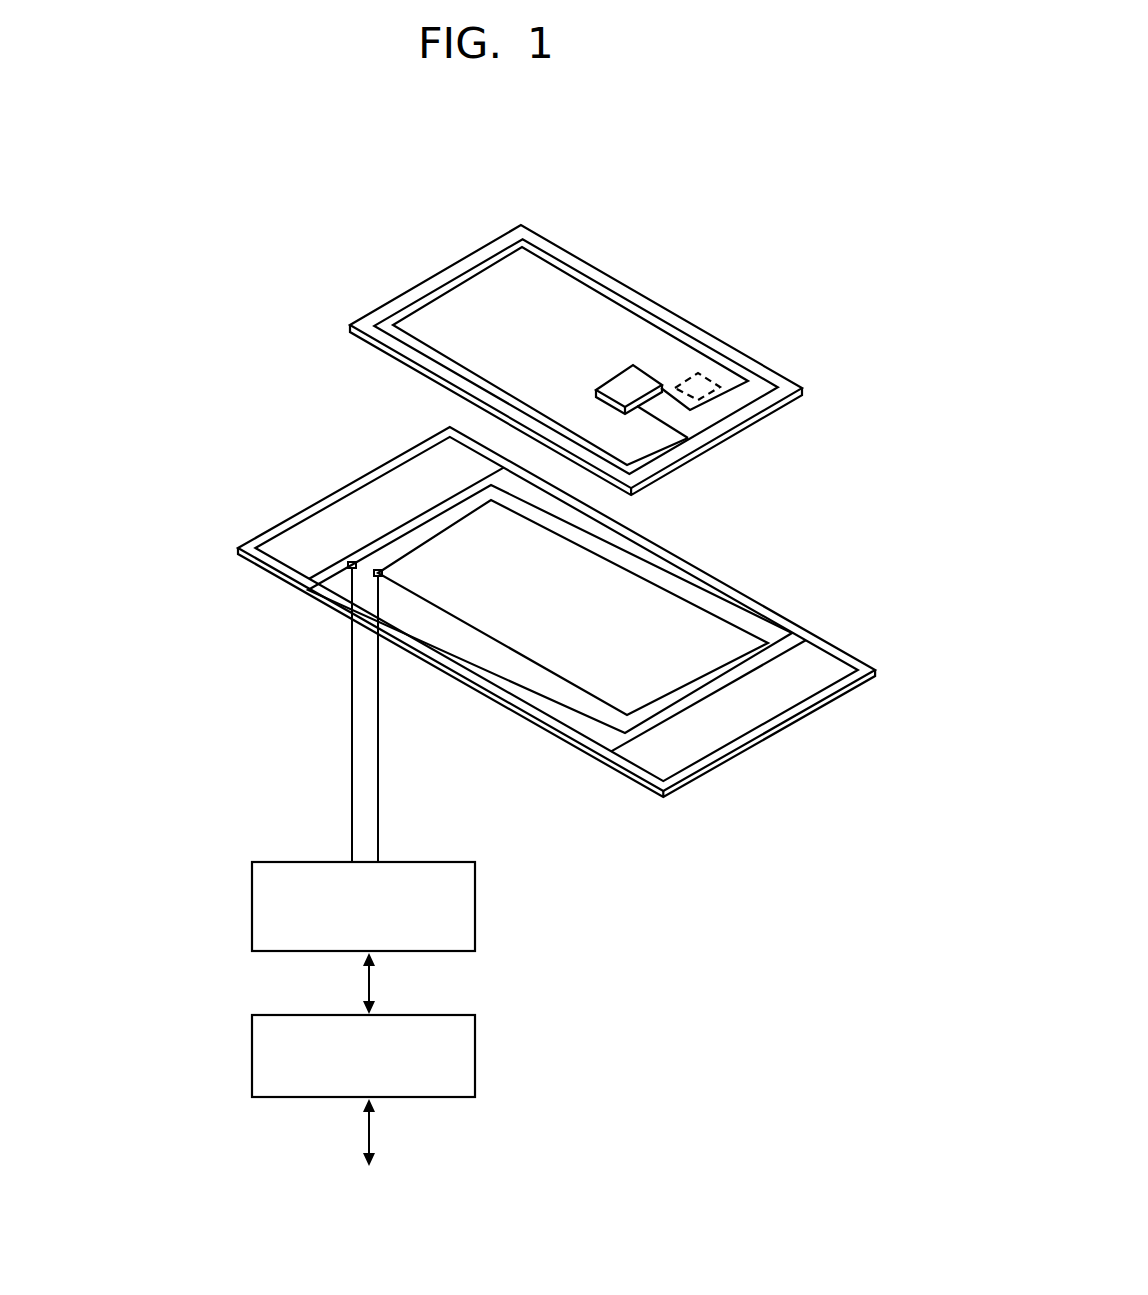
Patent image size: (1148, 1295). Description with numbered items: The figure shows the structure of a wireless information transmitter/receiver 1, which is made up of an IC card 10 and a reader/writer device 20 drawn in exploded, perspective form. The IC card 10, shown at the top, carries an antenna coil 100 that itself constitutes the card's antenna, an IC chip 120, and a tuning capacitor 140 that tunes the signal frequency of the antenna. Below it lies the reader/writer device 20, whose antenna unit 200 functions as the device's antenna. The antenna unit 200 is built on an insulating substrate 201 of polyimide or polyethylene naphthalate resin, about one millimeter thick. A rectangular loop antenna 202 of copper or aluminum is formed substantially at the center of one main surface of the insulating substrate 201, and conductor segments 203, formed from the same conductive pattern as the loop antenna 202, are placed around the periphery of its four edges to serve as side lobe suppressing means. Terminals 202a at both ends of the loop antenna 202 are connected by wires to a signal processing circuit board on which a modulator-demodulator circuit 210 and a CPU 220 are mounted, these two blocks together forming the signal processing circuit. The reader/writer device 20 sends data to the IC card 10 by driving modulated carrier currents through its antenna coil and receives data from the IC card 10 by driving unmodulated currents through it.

The wireless information transmitter/receiver 1 is at (838, 251).
The IC card 10 is at (582, 248).
The antenna coil 100 is at (624, 302).
The IC chip 120 is at (634, 381).
The tuning capacitor 140 is at (745, 365).
The reader/writer device 20 is at (188, 575).
The antenna unit 200 is at (733, 583).
The insulating substrate 201 is at (840, 638).
The loop antenna 202 is at (700, 745).
The terminals 202a is at (378, 566).
The conductor segments 203 is at (417, 490).
The modulator-demodulator circuit 210 is at (252, 914).
The CPU 220 is at (252, 1062).